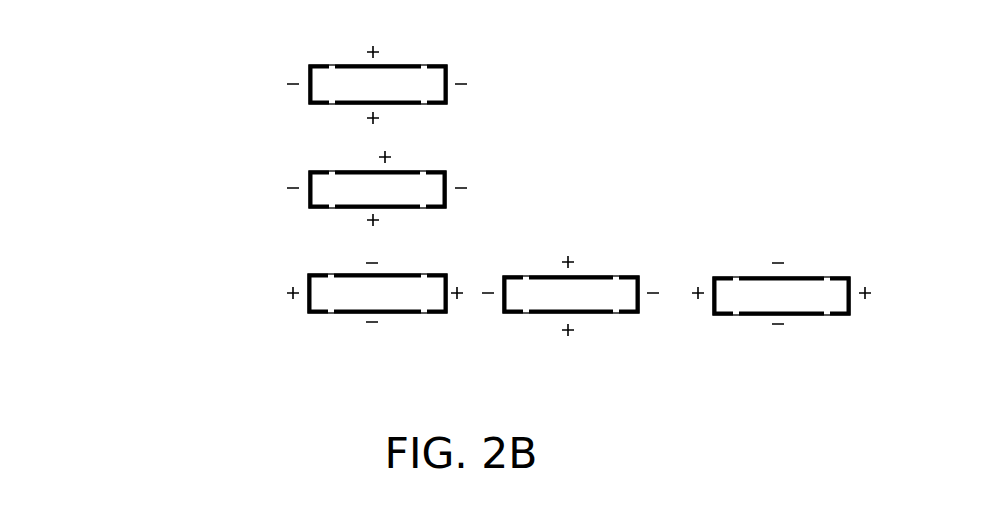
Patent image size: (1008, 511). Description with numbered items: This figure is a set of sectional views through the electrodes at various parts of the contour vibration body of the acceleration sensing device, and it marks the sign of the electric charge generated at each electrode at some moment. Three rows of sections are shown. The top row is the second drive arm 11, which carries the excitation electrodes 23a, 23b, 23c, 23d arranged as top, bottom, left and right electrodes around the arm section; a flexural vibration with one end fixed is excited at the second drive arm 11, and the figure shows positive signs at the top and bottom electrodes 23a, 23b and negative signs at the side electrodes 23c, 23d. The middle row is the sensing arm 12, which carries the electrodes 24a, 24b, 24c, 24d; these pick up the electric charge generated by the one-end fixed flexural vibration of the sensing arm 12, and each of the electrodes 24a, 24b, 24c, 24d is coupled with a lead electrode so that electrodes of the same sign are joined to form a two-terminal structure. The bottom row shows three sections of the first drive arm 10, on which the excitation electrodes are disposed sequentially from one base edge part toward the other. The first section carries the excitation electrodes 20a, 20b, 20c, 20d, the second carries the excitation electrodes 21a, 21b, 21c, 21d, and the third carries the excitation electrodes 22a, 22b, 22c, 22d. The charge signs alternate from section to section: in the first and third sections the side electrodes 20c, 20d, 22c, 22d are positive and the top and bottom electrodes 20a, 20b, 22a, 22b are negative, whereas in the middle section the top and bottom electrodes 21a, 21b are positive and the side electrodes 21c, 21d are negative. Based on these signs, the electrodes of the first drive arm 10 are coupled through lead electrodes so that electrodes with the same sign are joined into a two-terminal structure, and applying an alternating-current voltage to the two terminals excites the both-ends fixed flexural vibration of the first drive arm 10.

The first drive arm 10 is at (467, 298).
The second drive arm 11 is at (276, 82).
The sensing arm 12 is at (291, 187).
The excitation electrode 20a is at (363, 274).
The excitation electrode 20b is at (353, 313).
The excitation electrode 20c is at (308, 288).
The excitation electrode 20d is at (447, 310).
The excitation electrode 21a is at (552, 276).
The excitation electrode 21b is at (552, 313).
The excitation electrode 21c is at (503, 284).
The excitation electrode 21d is at (640, 306).
The excitation electrode 22a is at (793, 277).
The excitation electrode 22b is at (808, 315).
The excitation electrode 22c is at (713, 284).
The excitation electrode 22d is at (850, 302).
The excitation electrode 23a is at (392, 65).
The excitation electrode 23b is at (392, 104).
The excitation electrode 23c is at (309, 80).
The excitation electrode 23d is at (447, 77).
The electrode 24a is at (380, 171).
The electrode 24b is at (392, 208).
The electrode 24c is at (309, 186).
The electrode 24d is at (447, 183).